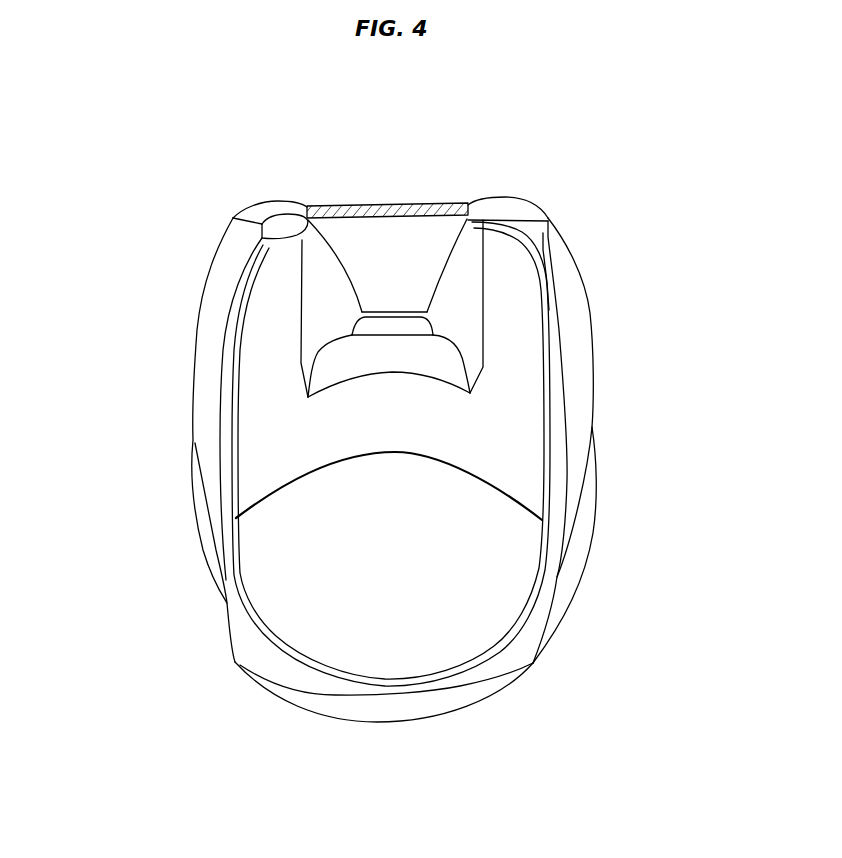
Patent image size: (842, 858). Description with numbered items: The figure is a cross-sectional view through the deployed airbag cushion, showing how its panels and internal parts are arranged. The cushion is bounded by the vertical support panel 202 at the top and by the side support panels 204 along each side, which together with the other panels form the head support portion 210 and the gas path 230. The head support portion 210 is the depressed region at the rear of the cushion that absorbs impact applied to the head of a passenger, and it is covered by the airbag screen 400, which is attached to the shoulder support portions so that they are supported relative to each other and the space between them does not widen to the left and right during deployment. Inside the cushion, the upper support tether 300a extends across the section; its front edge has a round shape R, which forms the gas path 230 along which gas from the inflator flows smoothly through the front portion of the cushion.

The airbag screen 400 is at (383, 205).
The head support portion 210 is at (378, 323).
The vertical support panel 202 is at (510, 197).
The side support panels 204 is at (593, 378).
The gas path 230 is at (415, 565).
The upper support tether 300a is at (275, 443).
The round shape R is at (493, 490).